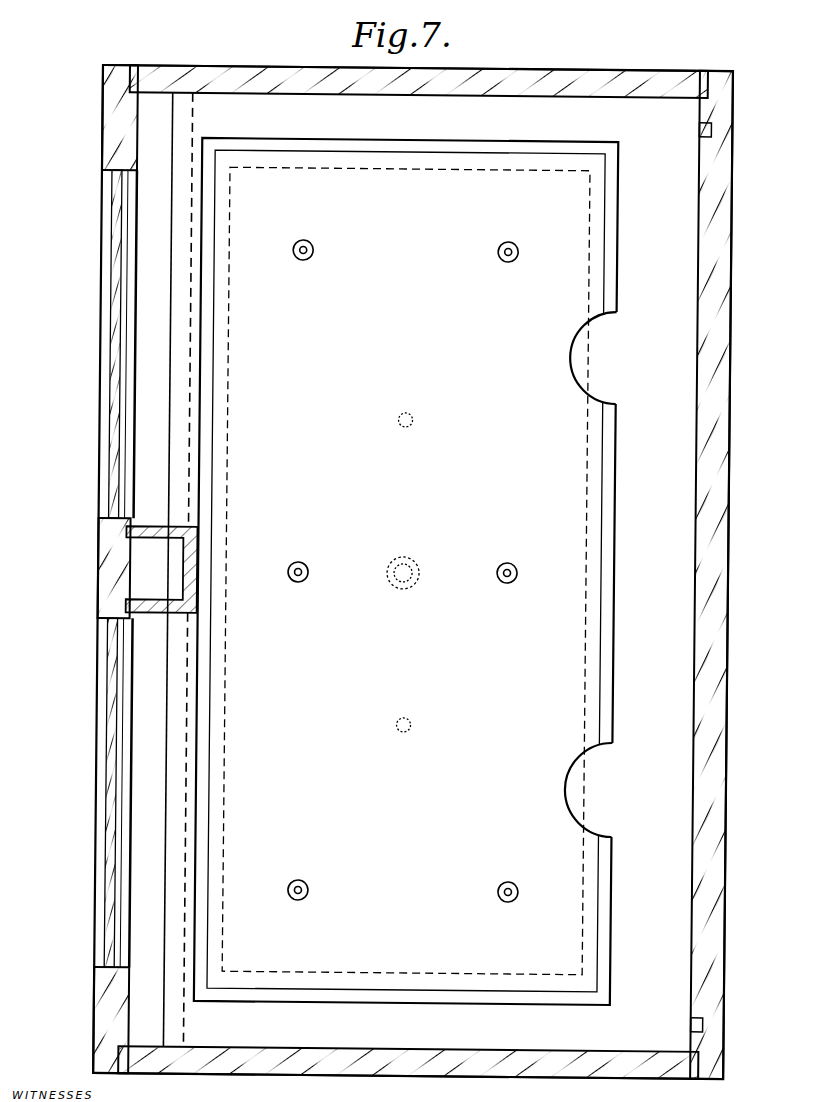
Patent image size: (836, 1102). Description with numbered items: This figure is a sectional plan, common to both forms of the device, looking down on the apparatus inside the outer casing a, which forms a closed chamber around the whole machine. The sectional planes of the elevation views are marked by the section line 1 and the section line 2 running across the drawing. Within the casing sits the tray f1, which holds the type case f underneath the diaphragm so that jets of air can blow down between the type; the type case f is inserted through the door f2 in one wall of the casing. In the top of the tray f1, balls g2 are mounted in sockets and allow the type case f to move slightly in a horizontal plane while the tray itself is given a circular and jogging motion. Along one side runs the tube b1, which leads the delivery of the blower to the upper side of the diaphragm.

The outer casing a is at (121, 410).
The section line 2- 2 is at (755, 570).
The tube b1 is at (152, 585).
The section line 1- 1 is at (755, 724).
The tray f1 is at (406, 571).
The balls g2 is at (313, 242).
The type case f is at (582, 781).
The door f2 is at (716, 634).